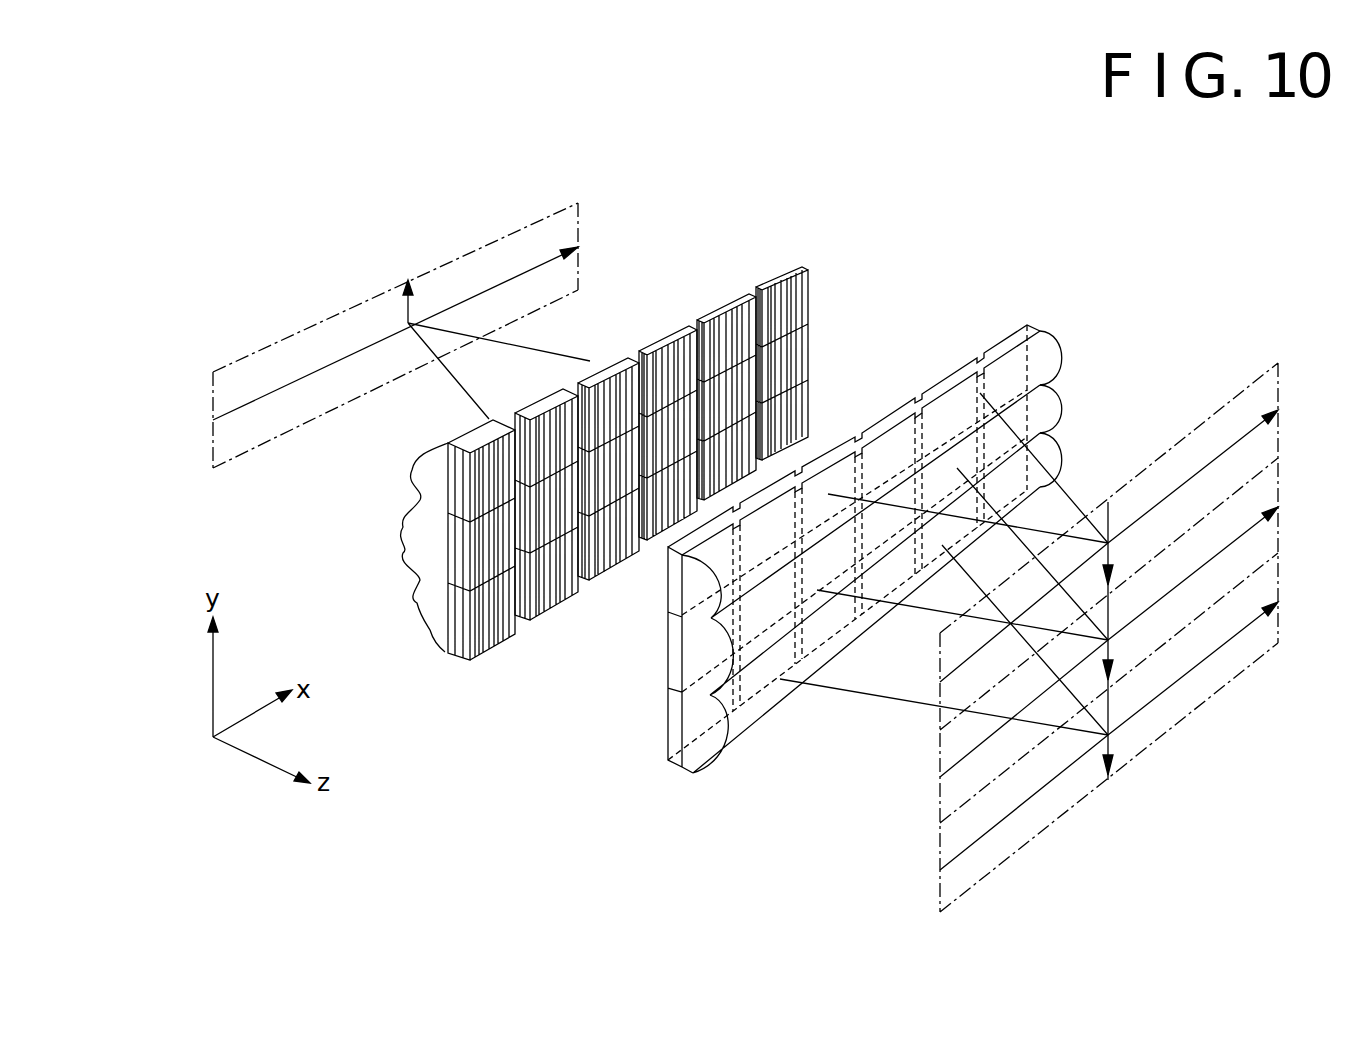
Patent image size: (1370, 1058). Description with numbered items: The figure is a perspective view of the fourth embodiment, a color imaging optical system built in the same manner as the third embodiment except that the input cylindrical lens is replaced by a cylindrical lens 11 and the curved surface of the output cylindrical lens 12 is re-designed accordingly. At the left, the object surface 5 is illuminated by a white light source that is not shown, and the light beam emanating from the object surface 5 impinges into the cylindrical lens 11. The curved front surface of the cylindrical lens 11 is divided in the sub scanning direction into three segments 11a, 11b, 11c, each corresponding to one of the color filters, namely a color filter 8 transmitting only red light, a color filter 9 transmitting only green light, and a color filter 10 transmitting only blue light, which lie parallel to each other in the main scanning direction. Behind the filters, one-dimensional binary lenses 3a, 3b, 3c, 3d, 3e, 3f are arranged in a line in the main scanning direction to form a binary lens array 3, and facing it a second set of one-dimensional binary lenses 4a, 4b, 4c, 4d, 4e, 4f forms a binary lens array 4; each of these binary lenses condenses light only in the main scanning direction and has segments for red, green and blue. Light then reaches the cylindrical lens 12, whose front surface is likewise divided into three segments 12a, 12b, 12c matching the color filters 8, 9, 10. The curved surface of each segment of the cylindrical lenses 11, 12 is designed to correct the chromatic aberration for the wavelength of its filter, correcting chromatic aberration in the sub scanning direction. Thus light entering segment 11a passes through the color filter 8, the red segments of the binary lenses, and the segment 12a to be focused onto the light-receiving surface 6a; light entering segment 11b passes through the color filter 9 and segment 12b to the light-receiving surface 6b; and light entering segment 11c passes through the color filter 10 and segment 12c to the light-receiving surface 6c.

The binary lens array 3 is at (398, 401).
The one-dimensional binary lens 3a is at (462, 427).
The one-dimensional binary lens 3b is at (548, 407).
The one-dimensional binary lens 3c is at (612, 372).
The one-dimensional binary lens 3d is at (670, 340).
The one-dimensional binary lens 3e is at (728, 304).
The one-dimensional binary lens 3f is at (784, 280).
The binary lens array 4 is at (925, 549).
The one-dimensional binary lens 4a is at (703, 725).
The one-dimensional binary lens 4b is at (755, 688).
The one-dimensional binary lens 4c is at (826, 630).
The one-dimensional binary lens 4d is at (893, 567).
The one-dimensional binary lens 4e is at (948, 530).
The one-dimensional binary lens 4f is at (1003, 483).
The object surface 5 is at (510, 232).
The light-receiving surface 6a is at (1288, 418).
The light-receiving surface 6b is at (1288, 518).
The light-receiving surface 6c is at (1288, 618).
The color filter 8 is at (453, 482).
The color filter 9 is at (453, 540).
The color filter 10 is at (453, 617).
The cylindrical lens 11 is at (318, 470).
The segment 11a is at (420, 500).
The segment 11b is at (417, 552).
The segment 11c is at (420, 605).
The cylindrical lens 12 is at (932, 551).
The segment 12a is at (1064, 356).
The segment 12b is at (1064, 406).
The segment 12c is at (917, 598).